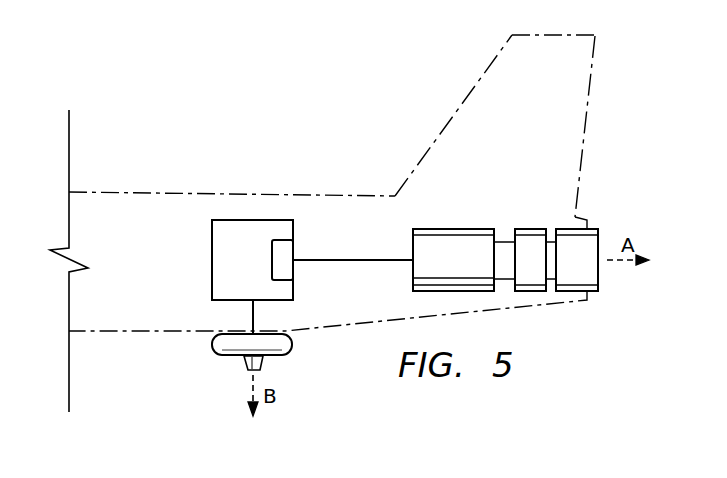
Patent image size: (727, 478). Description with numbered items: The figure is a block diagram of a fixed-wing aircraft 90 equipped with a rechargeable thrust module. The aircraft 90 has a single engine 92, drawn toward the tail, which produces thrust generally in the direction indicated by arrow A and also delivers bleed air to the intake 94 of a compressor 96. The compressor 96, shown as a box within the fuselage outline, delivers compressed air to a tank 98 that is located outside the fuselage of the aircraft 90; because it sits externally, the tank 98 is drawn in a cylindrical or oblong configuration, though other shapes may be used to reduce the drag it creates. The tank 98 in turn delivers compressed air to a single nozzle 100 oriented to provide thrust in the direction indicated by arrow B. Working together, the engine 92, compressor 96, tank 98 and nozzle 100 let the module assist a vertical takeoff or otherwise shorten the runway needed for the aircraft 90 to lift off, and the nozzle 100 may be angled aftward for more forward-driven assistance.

The aircraft 90 is at (197, 92).
The engine 92 is at (501, 208).
The intake 94 is at (272, 262).
The compressor 96 is at (211, 262).
The tank 98 is at (294, 343).
The nozzle 100 is at (244, 360).